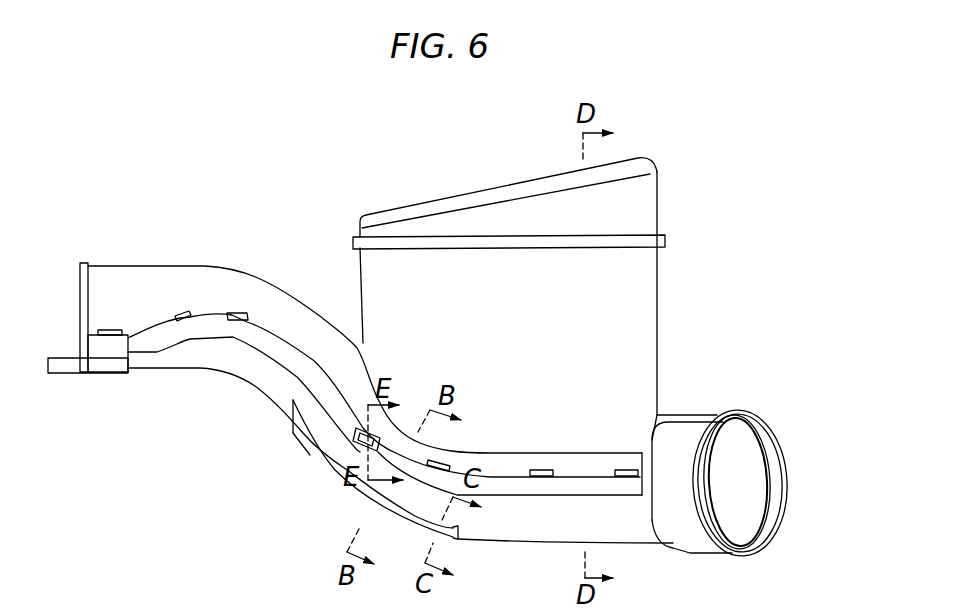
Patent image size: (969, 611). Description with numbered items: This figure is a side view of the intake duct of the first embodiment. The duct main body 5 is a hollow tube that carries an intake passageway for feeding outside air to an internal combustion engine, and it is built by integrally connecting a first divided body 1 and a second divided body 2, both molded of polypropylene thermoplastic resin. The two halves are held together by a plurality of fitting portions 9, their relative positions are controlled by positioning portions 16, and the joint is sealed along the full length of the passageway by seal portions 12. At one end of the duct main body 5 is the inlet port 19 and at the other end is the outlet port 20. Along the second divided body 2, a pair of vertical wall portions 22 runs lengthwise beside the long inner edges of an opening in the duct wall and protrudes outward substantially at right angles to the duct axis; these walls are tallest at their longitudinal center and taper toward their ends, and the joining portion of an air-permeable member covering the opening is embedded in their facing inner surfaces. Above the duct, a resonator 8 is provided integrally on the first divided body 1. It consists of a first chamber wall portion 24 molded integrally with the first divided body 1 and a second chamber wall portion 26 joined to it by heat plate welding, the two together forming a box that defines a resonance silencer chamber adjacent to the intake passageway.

The first divided body 1 is at (283, 298).
The second divided body 2 is at (263, 381).
The duct main body 5 is at (270, 260).
The resonator 8 is at (682, 211).
The fitting portions 9 is at (107, 335).
The seal portions 12 is at (505, 488).
The positioning portions 16 is at (404, 440).
The inlet port 19 is at (79, 292).
The outlet port 20 is at (796, 497).
The vertical wall portions 22 is at (323, 458).
The first chamber wall portion 24 is at (658, 328).
The second chamber wall portion 26 is at (660, 182).